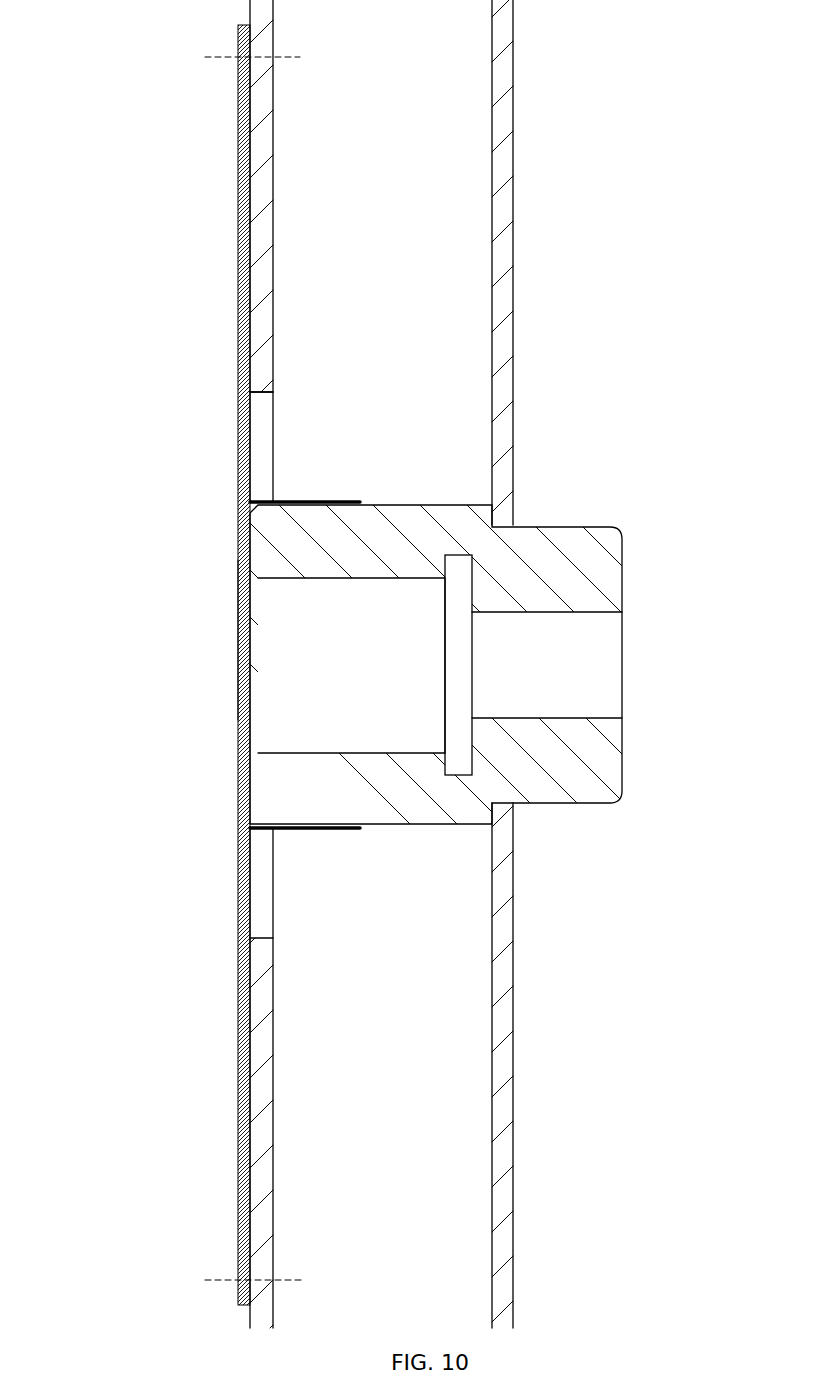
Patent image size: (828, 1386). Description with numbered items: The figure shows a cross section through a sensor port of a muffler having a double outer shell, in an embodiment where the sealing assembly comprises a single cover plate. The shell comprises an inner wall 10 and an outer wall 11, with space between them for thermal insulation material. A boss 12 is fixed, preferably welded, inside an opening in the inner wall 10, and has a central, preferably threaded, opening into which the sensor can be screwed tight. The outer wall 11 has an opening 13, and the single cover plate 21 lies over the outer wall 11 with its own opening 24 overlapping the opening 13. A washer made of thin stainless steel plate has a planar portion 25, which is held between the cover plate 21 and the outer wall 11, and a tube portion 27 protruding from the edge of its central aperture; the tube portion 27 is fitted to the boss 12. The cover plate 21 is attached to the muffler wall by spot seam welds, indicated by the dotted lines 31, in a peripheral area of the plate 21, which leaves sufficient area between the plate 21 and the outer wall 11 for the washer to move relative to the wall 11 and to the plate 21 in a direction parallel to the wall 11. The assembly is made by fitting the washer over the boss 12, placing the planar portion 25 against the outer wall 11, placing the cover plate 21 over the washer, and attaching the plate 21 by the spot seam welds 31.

The inner wall 10 is at (501, 218).
The outer wall 11 is at (260, 275).
The boss 12 is at (583, 578).
The opening 13 is at (265, 472).
The cover plate 21 is at (240, 245).
The opening 24 is at (238, 640).
The planar portion 25 is at (248, 430).
The tube portion 27 is at (308, 830).
The spot seam welds 31 is at (238, 669).